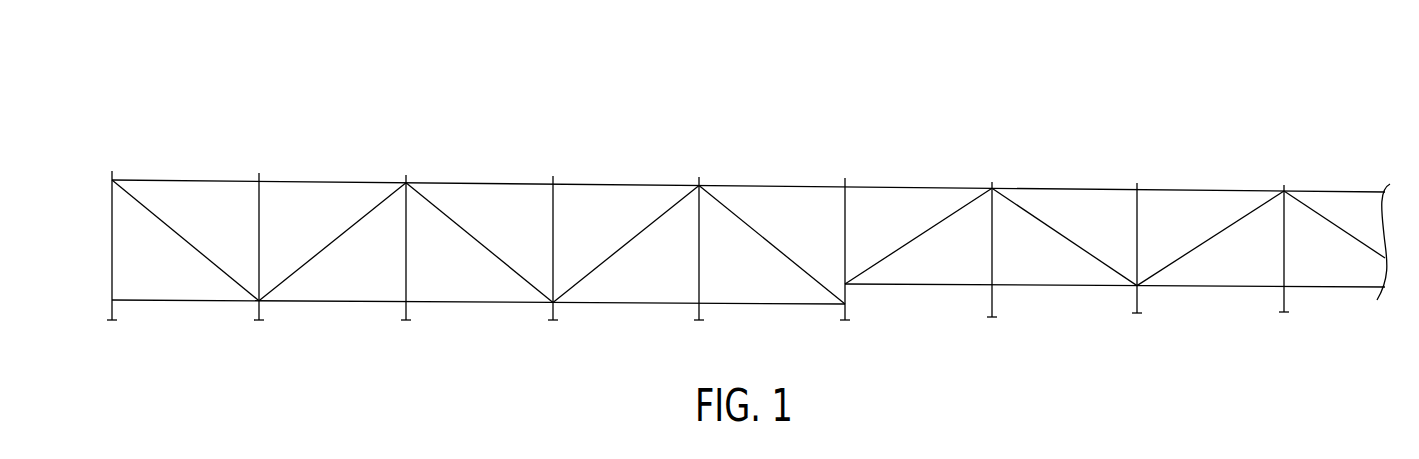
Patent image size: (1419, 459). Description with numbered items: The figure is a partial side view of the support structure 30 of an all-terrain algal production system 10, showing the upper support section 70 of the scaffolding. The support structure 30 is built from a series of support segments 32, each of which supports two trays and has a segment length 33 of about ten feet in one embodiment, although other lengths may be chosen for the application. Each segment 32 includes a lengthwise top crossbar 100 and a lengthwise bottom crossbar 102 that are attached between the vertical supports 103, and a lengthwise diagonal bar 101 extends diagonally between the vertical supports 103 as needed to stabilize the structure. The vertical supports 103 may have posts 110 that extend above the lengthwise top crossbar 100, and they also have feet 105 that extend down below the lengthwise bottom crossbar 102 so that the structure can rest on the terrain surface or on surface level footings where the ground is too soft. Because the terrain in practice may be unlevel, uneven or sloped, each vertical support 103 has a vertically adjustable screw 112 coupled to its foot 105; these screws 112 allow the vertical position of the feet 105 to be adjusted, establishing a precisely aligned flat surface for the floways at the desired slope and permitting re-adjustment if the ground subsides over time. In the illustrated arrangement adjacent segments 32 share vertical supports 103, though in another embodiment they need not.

The ATATS algal production system 10 is at (1235, 66).
The support structure 30 is at (800, 197).
The support segment 32 is at (635, 158).
The segment length 33 is at (259, 162).
The upper support section 70 is at (1361, 192).
The lengthwise top crossbar 100 is at (1208, 190).
The lengthwise diagonal bar 101 is at (1195, 250).
The lengthwise bottom crossbar 102 is at (1206, 290).
The vertical support 103 is at (1136, 230).
The foot 105 is at (700, 322).
The post 110 is at (701, 185).
The vertically adjustable screw 112 is at (110, 305).